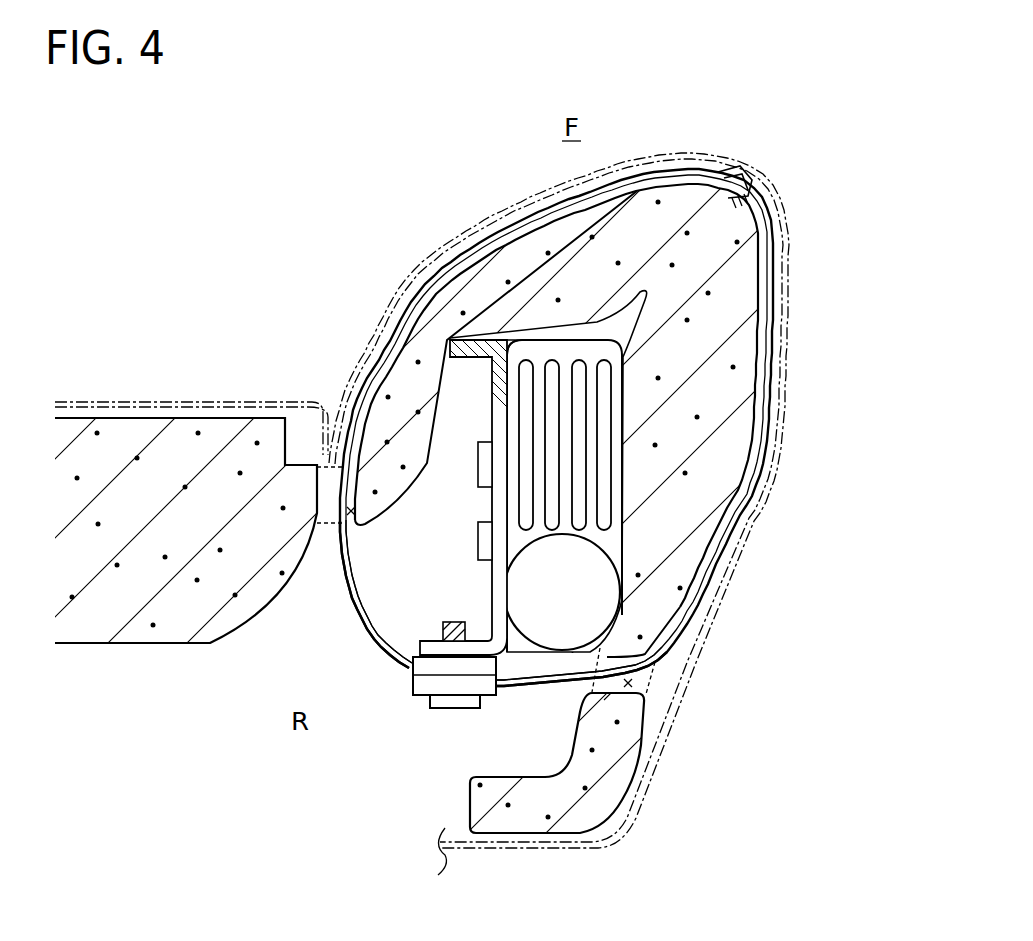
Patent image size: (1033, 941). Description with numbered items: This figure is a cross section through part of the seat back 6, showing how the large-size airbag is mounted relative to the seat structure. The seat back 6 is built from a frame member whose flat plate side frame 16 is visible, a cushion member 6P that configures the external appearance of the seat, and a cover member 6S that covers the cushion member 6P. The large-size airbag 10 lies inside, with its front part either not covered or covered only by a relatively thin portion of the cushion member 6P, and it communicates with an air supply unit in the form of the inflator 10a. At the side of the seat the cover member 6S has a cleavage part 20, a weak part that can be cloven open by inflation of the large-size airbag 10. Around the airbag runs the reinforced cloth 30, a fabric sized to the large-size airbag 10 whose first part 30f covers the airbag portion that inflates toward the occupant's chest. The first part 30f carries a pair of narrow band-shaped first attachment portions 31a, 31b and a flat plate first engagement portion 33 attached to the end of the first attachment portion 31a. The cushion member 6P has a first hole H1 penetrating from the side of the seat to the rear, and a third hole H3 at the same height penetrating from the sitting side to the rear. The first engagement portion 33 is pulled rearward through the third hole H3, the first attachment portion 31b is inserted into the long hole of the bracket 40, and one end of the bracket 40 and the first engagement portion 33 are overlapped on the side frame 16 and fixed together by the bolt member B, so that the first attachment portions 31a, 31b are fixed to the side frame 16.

The seat back 6 is at (118, 352).
The cushion member 6P is at (740, 295).
The cover member 6S is at (793, 372).
The large-size airbag 10 is at (625, 513).
The inflator 10a is at (590, 590).
The side frame 16 is at (497, 578).
The cleavage part 20 is at (742, 166).
The reinforced cloth 30 is at (760, 478).
The first part 30f is at (755, 198).
The first attachment portion 31a is at (353, 597).
The first attachment portion 31b is at (555, 688).
The first engagement portion 33 is at (430, 668).
The bracket 40 is at (463, 690).
The bolt member B is at (457, 705).
The first hole H1 is at (634, 684).
The third hole H3 is at (355, 516).